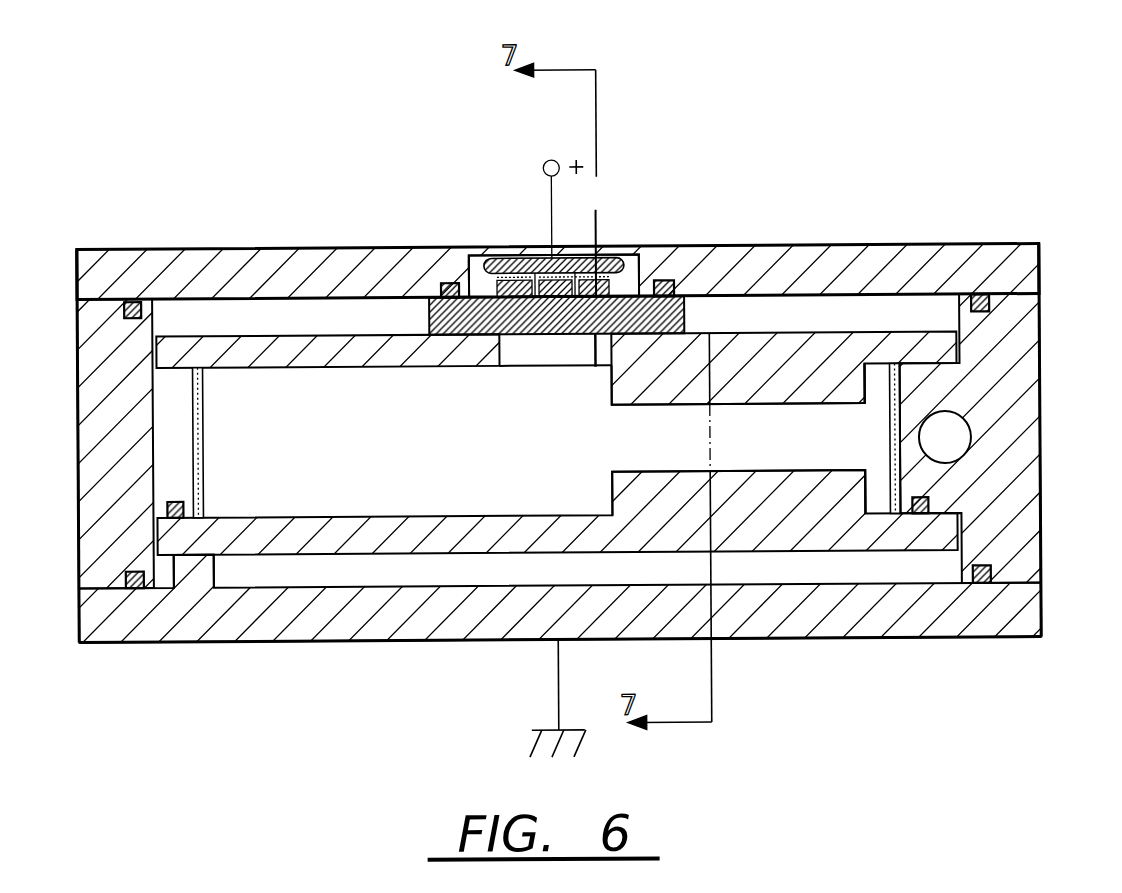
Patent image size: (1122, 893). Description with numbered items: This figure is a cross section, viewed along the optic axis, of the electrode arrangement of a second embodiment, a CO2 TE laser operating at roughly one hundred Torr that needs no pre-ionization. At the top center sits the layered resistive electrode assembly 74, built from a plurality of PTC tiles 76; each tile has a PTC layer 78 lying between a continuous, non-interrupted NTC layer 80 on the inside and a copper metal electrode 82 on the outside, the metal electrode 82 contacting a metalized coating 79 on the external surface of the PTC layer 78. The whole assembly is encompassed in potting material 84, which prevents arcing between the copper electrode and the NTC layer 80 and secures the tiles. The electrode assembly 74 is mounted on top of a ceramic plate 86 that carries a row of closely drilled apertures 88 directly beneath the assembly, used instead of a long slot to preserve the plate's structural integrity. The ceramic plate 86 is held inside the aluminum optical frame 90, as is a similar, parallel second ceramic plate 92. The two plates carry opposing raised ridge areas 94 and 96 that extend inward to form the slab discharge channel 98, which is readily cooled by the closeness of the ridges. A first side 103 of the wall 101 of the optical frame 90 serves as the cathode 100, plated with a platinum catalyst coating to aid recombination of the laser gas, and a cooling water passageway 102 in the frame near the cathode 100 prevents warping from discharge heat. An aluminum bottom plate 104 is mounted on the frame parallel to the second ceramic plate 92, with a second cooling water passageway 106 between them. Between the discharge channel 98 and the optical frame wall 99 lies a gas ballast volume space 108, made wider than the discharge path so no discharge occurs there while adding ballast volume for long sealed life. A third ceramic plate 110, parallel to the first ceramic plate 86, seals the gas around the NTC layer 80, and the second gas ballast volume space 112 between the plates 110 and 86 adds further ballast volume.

The layered resistive electrode assembly 74 is at (632, 238).
The PTC tiles 76 is at (568, 290).
The PTC layer 78 is at (492, 282).
The metalized coating 79 is at (597, 368).
The NTC layer 80 is at (478, 320).
The metal electrode 82 is at (614, 260).
The potting material 84 is at (470, 290).
The ceramic plate 86 is at (316, 350).
The apertures 88 is at (537, 355).
The optical frame 90 is at (78, 428).
The second ceramic plate 92 is at (530, 540).
The raised ridge area 94 is at (692, 396).
The raised ridge area 96 is at (745, 517).
The discharge channel 98 is at (805, 456).
The optical frame wall 99 is at (205, 479).
The cathode 100 is at (893, 443).
The wall 101 is at (884, 487).
The cooling water passageway 102 is at (924, 440).
The first side 103 is at (931, 555).
The bottom plate 104 is at (415, 616).
The second cooling water passageway 106 is at (288, 573).
The gas ballast volume space 108 is at (370, 458).
The third ceramic plate 110 is at (118, 259).
The second gas ballast volume space 112 is at (270, 328).